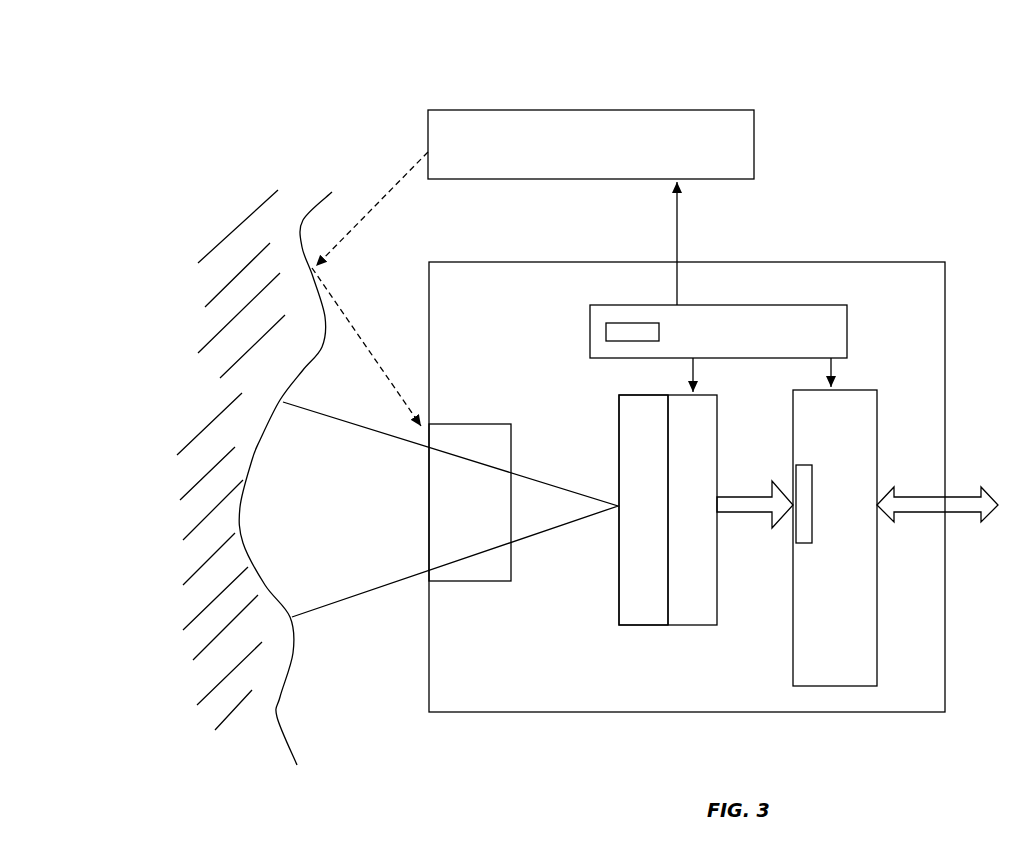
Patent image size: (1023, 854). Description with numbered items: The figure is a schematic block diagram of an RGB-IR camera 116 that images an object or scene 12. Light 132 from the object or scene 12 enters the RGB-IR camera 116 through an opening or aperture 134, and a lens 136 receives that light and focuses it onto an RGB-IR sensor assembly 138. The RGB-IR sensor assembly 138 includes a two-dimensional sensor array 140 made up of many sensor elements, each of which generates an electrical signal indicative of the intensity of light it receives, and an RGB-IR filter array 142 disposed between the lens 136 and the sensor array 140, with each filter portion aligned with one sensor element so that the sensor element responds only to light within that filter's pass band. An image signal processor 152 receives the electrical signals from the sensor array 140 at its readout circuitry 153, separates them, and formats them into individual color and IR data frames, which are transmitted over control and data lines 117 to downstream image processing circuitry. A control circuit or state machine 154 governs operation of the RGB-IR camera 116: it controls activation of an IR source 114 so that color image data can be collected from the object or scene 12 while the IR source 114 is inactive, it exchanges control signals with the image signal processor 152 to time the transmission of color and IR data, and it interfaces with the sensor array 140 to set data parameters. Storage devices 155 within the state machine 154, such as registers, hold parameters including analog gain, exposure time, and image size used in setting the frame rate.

The object or scene 12 is at (370, 104).
The IR source 114 is at (591, 144).
The RGB-IR camera 116 is at (687, 487).
The control and data lines 117 is at (962, 497).
The light 132 is at (391, 600).
The opening or aperture 134 is at (470, 502).
The lens 136 is at (490, 424).
The RGB-IR sensor assembly 138 is at (565, 608).
The sensor array 140 is at (697, 617).
The RGB-IR filter array 142 is at (651, 610).
The image signal processor 152 is at (835, 538).
The readout circuitry 153 is at (808, 465).
The control circuit or state machine 154 is at (792, 305).
The storage devices 155 is at (621, 342).